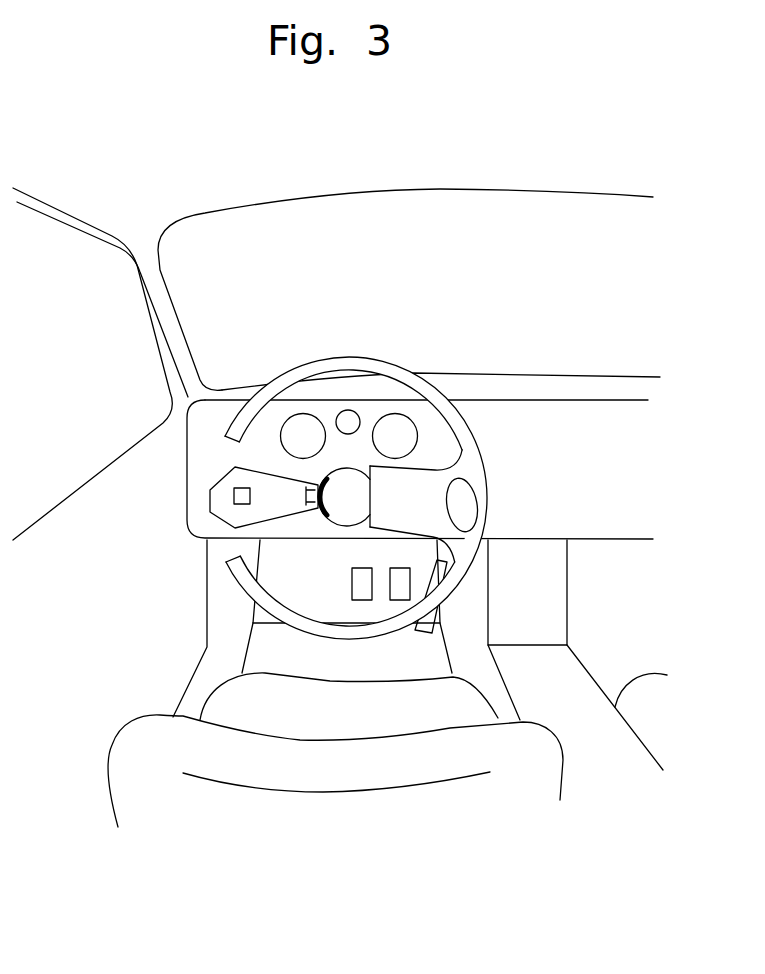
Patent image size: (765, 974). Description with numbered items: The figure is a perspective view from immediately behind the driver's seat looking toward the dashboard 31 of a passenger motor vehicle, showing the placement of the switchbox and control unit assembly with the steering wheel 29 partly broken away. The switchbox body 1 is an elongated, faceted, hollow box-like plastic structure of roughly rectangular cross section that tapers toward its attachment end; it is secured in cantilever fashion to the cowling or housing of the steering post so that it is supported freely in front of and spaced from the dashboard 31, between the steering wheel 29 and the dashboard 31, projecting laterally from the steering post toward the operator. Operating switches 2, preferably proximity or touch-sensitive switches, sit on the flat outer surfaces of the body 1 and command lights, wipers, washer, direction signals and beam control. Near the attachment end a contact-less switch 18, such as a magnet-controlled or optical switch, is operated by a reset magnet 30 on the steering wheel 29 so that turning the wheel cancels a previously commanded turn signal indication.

The body 1 is at (212, 499).
The operating switches 2 is at (237, 488).
The contact-less switch 18 is at (312, 485).
The steering wheel 29 is at (386, 372).
The reset magnet 30 is at (326, 514).
The dashboard 31 is at (557, 497).